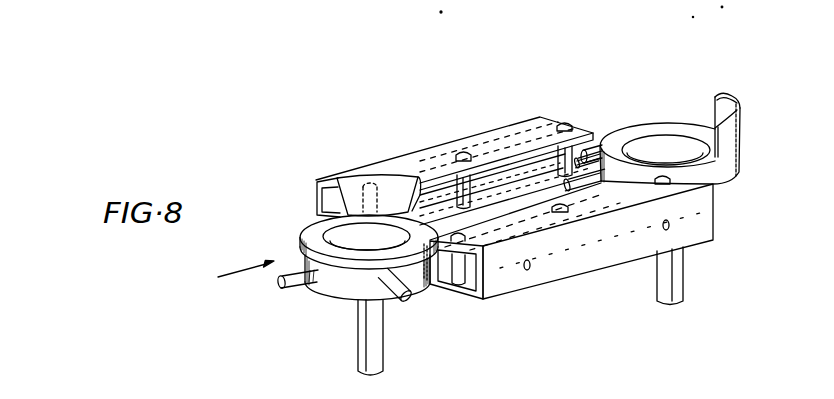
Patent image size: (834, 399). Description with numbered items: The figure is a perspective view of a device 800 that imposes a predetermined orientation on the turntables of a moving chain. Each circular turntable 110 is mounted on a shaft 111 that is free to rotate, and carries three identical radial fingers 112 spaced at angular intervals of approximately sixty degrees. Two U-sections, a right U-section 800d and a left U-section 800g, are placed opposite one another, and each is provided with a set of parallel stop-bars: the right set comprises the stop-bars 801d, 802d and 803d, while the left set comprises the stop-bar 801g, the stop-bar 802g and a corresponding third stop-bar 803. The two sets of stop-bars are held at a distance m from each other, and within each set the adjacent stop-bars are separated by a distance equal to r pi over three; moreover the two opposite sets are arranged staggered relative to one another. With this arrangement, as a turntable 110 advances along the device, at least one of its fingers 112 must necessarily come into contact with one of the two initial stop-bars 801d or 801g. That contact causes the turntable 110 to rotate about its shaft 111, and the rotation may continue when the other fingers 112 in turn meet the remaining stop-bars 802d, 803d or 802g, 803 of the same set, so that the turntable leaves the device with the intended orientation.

The carrier assembly 800 is at (542, 316).
The right U-section 800d is at (560, 257).
The left U-section 800g is at (398, 161).
The stop-bar 801g is at (363, 183).
The stop-bar 801d is at (436, 286).
The stop-bar 802g is at (462, 152).
The stop-bar 802d is at (561, 212).
The guide rods 803 is at (584, 182).
The stop-bar 803d is at (667, 183).
The circular turntable 110 is at (310, 236).
The shaft 111 is at (373, 330).
The radial finger 112 is at (280, 286).